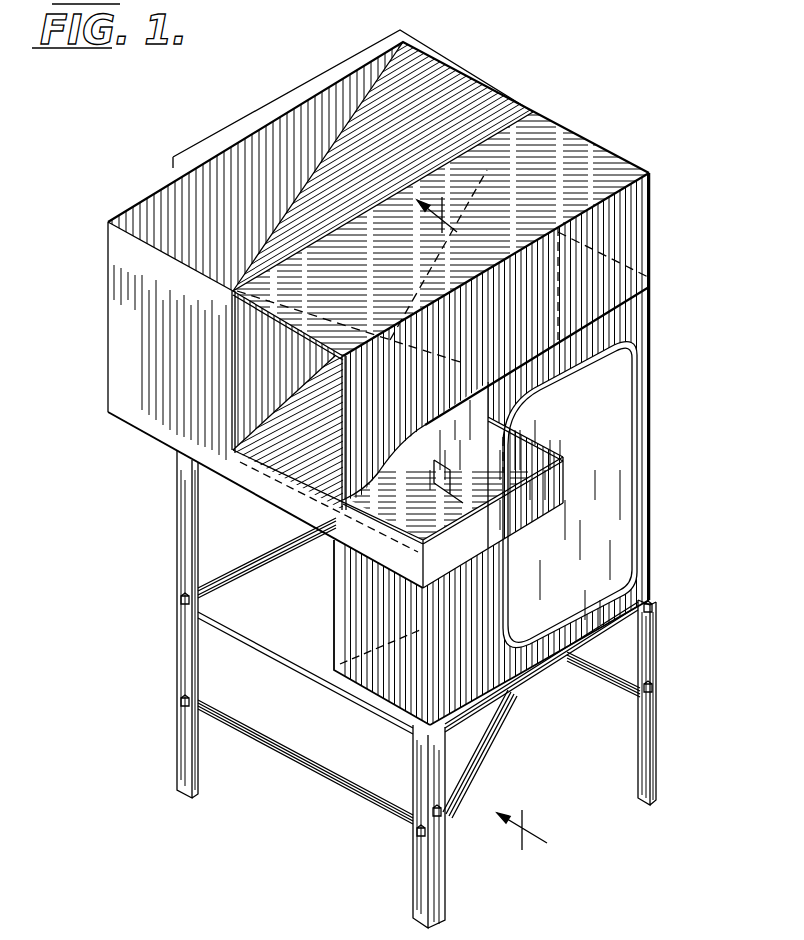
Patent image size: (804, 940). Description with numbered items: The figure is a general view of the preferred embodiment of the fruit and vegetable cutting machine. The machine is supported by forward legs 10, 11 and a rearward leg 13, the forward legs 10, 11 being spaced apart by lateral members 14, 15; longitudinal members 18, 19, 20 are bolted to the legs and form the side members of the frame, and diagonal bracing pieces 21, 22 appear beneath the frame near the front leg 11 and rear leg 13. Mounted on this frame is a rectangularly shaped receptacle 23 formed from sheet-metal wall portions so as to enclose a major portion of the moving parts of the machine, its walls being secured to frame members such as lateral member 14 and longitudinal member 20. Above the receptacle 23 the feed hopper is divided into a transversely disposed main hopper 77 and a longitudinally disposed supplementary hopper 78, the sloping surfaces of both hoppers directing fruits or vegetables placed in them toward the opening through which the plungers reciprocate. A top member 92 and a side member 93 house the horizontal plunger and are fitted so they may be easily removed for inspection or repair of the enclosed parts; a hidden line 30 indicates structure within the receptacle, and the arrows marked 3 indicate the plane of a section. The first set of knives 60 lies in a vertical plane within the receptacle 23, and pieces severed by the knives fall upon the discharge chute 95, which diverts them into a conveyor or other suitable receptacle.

The forward leg 10 is at (188, 768).
The forward leg 11 is at (435, 896).
The rearward leg 13 is at (656, 724).
The lateral member 14 is at (303, 667).
The lateral member 15 is at (320, 782).
The longitudinal member 18 is at (270, 556).
The longitudinal member 19 is at (290, 102).
The longitudinal member 20 is at (538, 676).
The left brace 21 is at (483, 740).
The right brace 22 is at (618, 683).
The receptacle 23 is at (665, 298).
The hidden sloped partition 30 is at (648, 255).
The section line 3- 3 is at (491, 529).
The first set of knives 60 is at (612, 462).
The main hopper 77 is at (512, 465).
The supplementary hopper 78 is at (455, 100).
The top member 92 is at (598, 160).
The side member 93 is at (630, 219).
The discharge chute 95 is at (282, 447).